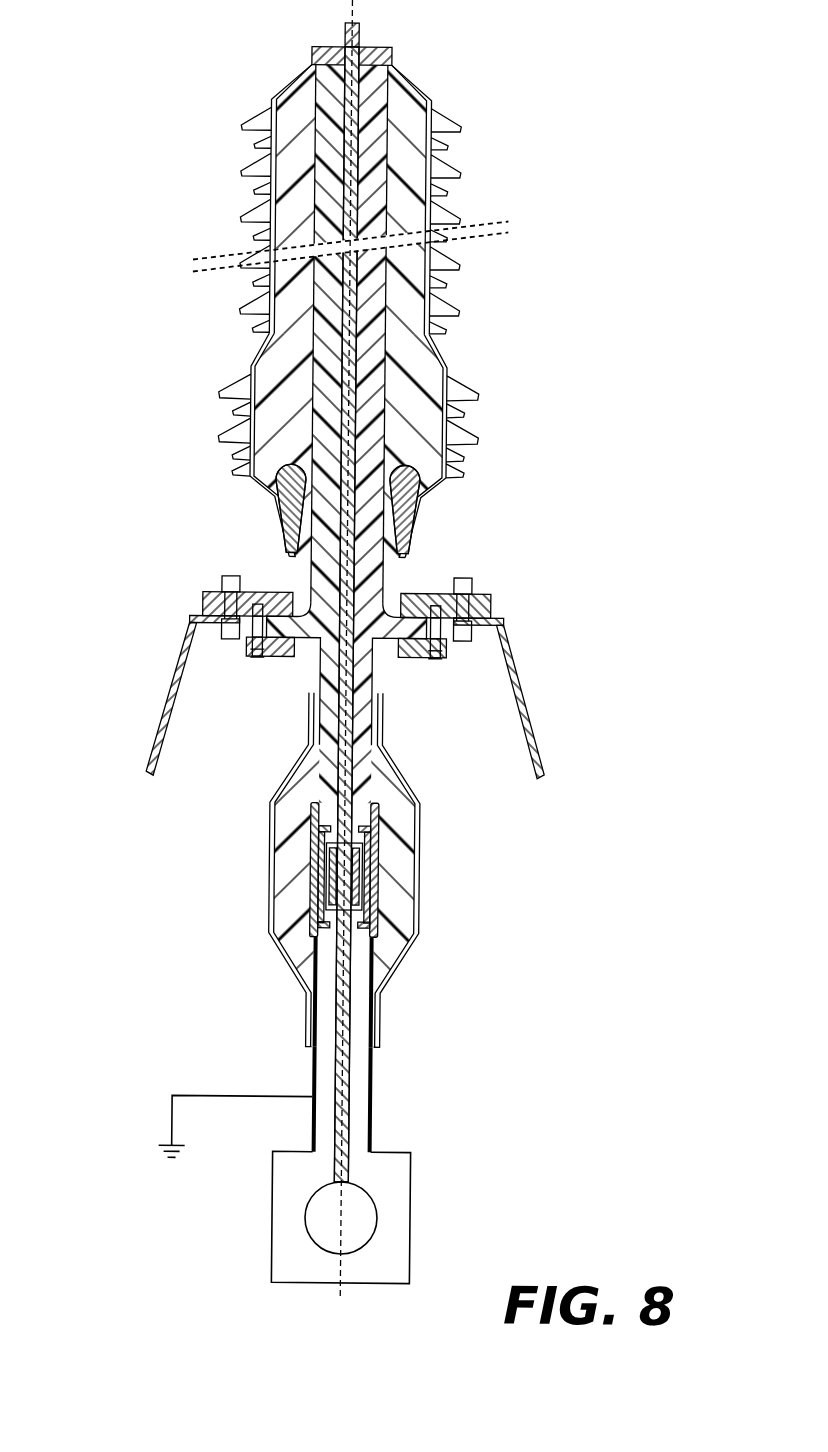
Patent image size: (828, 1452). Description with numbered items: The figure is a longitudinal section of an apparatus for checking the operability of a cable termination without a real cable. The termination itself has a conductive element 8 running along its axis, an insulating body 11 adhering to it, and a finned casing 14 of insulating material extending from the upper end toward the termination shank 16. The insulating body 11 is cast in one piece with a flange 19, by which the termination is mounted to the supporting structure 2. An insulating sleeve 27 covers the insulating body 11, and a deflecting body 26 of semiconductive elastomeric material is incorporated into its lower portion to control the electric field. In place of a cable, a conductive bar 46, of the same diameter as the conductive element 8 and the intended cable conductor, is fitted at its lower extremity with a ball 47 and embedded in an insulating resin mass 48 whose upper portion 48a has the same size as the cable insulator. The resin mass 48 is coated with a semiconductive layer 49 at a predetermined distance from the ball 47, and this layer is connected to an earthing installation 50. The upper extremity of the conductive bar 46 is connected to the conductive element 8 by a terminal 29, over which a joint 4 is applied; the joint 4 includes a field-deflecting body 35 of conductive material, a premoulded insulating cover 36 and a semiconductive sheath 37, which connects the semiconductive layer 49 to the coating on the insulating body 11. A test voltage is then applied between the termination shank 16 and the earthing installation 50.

The supporting structure 2 is at (526, 665).
The joint 4 is at (262, 887).
The conductive element 8 is at (362, 567).
The insulating body 11 is at (391, 440).
The finned casing 14 is at (454, 303).
The termination shank 16 is at (359, 33).
The flange 19 is at (278, 655).
The deflecting body 26 is at (294, 495).
The insulating sleeve 27 is at (275, 360).
The terminal 29 is at (375, 873).
The field-deflecting body 35 is at (384, 828).
The cover 36 is at (297, 843).
The sheath 37 is at (410, 787).
The conductive bar 46 is at (357, 1150).
The ball 47 is at (331, 1225).
The insulating resin mass 48 is at (400, 1170).
The upper portion of resin mass 48a is at (372, 1000).
The semiconductive layer 49 is at (320, 1070).
The earthing installation 50 is at (182, 1115).